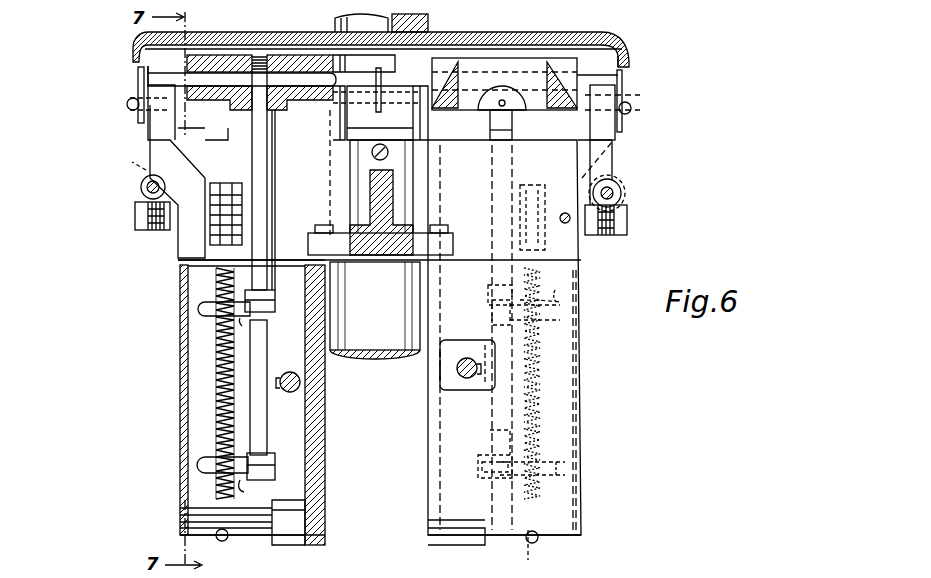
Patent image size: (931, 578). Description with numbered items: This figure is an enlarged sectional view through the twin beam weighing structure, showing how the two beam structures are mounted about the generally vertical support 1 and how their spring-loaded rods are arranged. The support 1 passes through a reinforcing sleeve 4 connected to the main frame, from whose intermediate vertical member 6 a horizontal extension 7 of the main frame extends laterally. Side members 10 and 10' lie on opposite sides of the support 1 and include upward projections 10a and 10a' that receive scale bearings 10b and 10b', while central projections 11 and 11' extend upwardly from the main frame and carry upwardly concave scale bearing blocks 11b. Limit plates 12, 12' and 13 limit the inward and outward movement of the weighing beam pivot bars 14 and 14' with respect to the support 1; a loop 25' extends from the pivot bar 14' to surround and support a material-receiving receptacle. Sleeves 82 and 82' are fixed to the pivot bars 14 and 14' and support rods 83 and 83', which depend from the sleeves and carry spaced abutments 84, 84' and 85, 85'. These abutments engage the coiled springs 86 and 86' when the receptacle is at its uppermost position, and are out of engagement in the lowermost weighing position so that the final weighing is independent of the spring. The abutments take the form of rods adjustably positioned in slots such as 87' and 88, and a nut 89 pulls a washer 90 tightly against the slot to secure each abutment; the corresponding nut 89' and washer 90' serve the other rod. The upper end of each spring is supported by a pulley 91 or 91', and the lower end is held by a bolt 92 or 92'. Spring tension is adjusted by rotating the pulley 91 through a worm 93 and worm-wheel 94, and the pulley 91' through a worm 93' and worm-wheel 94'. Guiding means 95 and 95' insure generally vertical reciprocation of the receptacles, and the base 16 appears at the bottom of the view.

The support 1 is at (380, 345).
The reinforcing sleeve 4 is at (450, 135).
The intermediate vertical member 6 is at (224, 148).
The horizontal extension 7 is at (365, 228).
The side member 10 is at (150, 162).
The upward projection 10a is at (118, 103).
The scale bearing 10b is at (115, 105).
The side member 10' is at (620, 172).
The upward projection 10a' is at (639, 101).
The scale bearing 10b' is at (654, 101).
The central projection 11 is at (366, 97).
The central projection 11' is at (438, 113).
The scale bearing block 11b is at (430, 28).
The limit plate 12 is at (107, 93).
The limit plate 12' is at (634, 87).
The limit plate 13 is at (381, 68).
The weighing beam pivot bar 14 is at (360, 46).
The weighing beam pivot bar 14' is at (610, 40).
The base 16 is at (380, 553).
The loop 25' is at (511, 58).
The sleeve 82 is at (241, 58).
The sleeve 82' is at (504, 74).
The rod 83 is at (303, 263).
The rod 83' is at (467, 365).
The abutment 84 is at (193, 306).
The abutment 84' is at (570, 292).
The abutment 85 is at (192, 463).
The abutment 85' is at (561, 469).
The coiled spring 86 is at (185, 383).
The coiled spring 86' is at (572, 383).
The slot 87' is at (485, 285).
The slot 88 is at (495, 467).
The nut 89 is at (273, 385).
The nut 89' is at (507, 310).
The washer 90 is at (205, 409).
The washer 90' is at (559, 290).
The pulley 91 is at (226, 195).
The pulley 91' is at (545, 199).
The bolt 92 is at (226, 536).
The bolt 92' is at (542, 549).
The worm 93 is at (131, 177).
The worm 93' is at (621, 189).
The worm-wheel 94 is at (135, 228).
The worm-wheel 94' is at (615, 233).
The guiding means 95 is at (314, 378).
The guiding means 95' is at (436, 386).